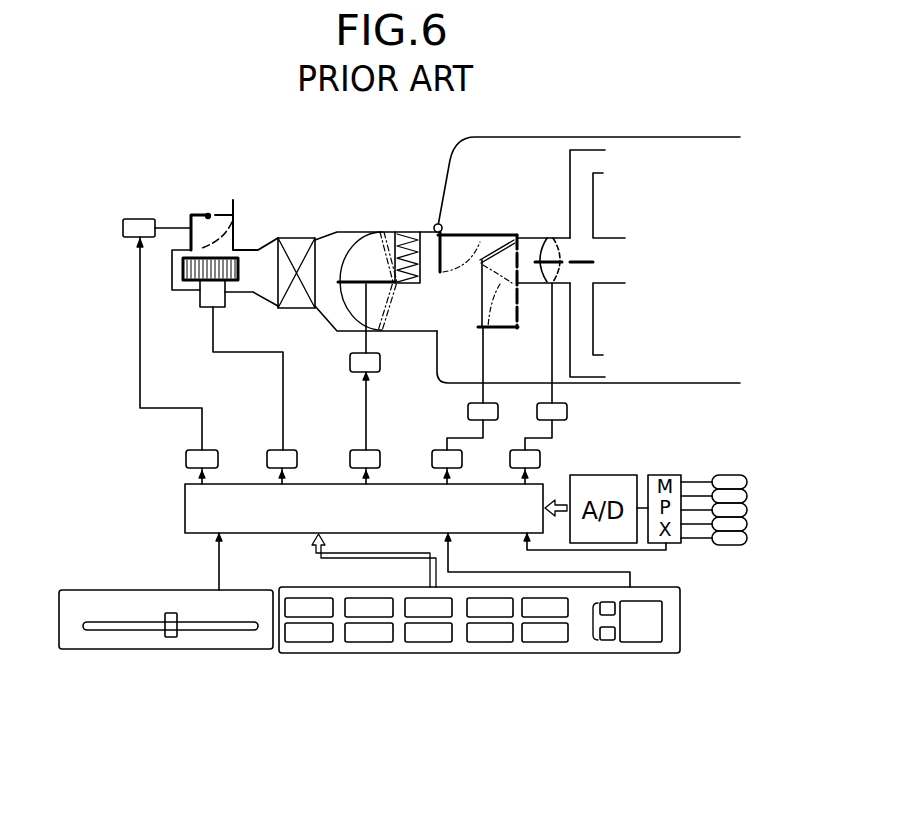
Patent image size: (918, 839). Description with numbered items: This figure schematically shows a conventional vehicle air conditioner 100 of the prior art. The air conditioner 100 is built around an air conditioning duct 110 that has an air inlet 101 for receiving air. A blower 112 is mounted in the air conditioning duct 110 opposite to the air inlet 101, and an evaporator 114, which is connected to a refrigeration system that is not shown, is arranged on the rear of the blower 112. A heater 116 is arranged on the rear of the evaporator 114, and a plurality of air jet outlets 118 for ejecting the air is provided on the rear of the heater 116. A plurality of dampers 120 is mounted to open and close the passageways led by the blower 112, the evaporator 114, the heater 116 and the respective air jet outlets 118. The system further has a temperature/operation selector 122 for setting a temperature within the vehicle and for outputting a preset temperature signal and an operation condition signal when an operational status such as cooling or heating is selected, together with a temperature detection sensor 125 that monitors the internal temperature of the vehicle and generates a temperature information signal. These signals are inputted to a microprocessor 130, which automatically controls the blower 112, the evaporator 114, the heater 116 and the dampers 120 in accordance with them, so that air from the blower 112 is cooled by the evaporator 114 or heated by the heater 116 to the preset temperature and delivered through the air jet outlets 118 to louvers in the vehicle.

The conventional air conditioner 100 is at (183, 188).
The air inlet 101 is at (209, 213).
The air conditioning duct 110 is at (338, 231).
The blower 112 is at (183, 267).
The evaporator 114 is at (297, 248).
The heater 116 is at (410, 231).
The air jet outlets 118 is at (597, 158).
The dampers 120 is at (372, 281).
The temperature/operation selector 122 is at (240, 650).
The temperature detection sensor 125 is at (757, 480).
The microprocessor 130 is at (400, 478).